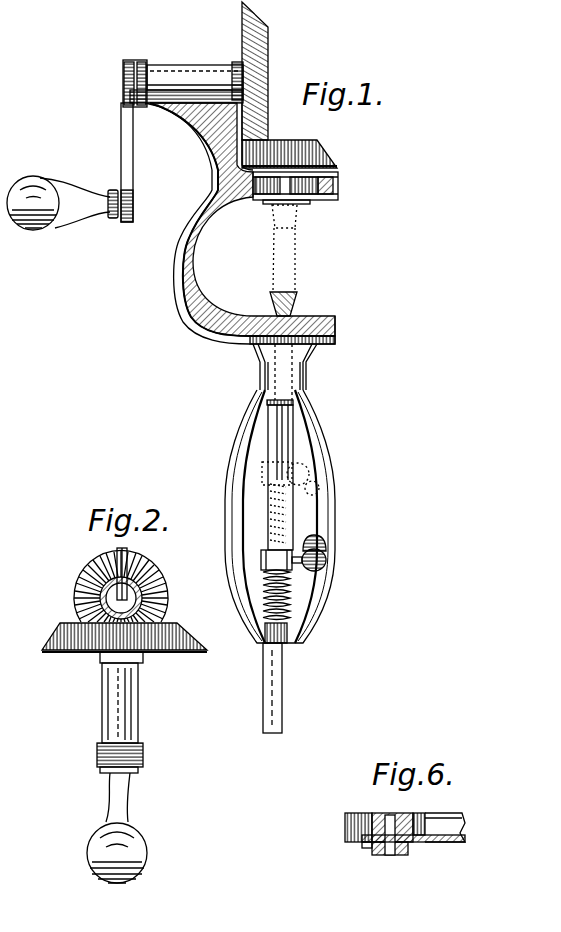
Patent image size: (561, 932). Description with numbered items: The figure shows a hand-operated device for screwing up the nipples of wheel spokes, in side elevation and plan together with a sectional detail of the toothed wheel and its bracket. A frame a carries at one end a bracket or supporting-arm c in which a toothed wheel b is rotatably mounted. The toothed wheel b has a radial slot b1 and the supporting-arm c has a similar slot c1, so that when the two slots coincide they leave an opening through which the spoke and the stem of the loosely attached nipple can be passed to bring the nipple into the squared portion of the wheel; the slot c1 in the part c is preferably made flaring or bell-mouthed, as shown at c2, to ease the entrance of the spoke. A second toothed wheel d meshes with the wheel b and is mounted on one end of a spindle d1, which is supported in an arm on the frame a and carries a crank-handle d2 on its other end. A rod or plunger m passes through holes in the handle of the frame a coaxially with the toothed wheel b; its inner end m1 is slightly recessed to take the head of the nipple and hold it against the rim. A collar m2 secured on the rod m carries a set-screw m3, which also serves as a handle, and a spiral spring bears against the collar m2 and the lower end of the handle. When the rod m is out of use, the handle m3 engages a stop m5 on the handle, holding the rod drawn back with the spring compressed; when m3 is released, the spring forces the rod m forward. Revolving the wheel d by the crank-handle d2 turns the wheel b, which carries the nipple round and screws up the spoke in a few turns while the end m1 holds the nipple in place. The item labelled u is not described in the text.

In FIG. 1, the frame a is at (194, 250).
In FIG. 1, the toothed wheel b is at (314, 146).
In FIG. 2, the toothed wheel b is at (95, 577).
In FIG. 6, the toothed wheel b is at (418, 823).
In FIG. 2, the radial slot b1 is at (150, 575).
In FIG. 1, the bracket or supporting-arm c is at (338, 182).
In FIG. 2, the bracket or supporting-arm c is at (113, 552).
In FIG. 6, the bracket or supporting-arm c is at (368, 813).
In FIG. 2, the slot c1 is at (130, 552).
In FIG. 6, the flaring or bell-mouthed portion c2 is at (347, 828).
In FIG. 1, the toothed wheel d is at (268, 65).
In FIG. 2, the toothed wheel d is at (62, 627).
In FIG. 1, the spindle d1 is at (145, 62).
In FIG. 2, the spindle d1 is at (115, 700).
In FIG. 1, the crank-handle d2 is at (121, 170).
In FIG. 2, the crank-handle d2 is at (122, 790).
In FIG. 1, the rod or plunger m is at (268, 438).
In FIG. 1, the shaped end of rod m1 is at (300, 300).
In FIG. 1, the collar m2 is at (261, 557).
In FIG. 1, the set-screw m3 is at (328, 560).
In FIG. 1, the stop m5 is at (325, 546).
In FIG. 6, the plate u is at (447, 822).